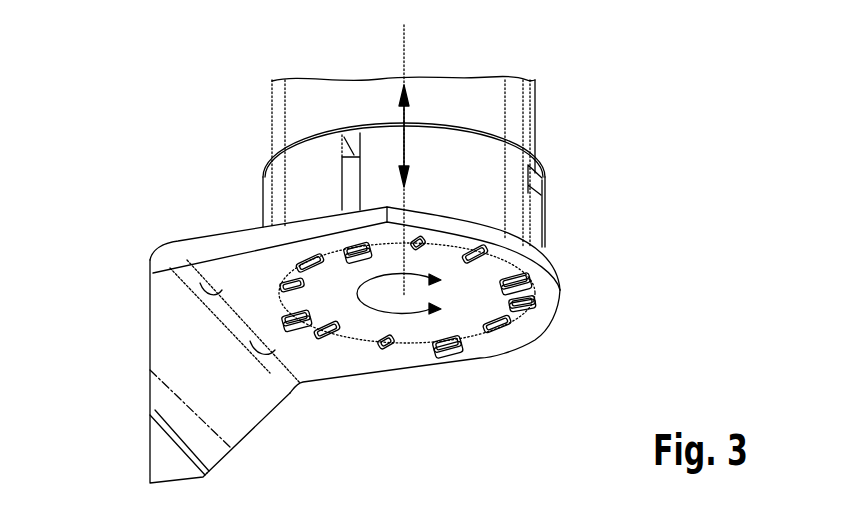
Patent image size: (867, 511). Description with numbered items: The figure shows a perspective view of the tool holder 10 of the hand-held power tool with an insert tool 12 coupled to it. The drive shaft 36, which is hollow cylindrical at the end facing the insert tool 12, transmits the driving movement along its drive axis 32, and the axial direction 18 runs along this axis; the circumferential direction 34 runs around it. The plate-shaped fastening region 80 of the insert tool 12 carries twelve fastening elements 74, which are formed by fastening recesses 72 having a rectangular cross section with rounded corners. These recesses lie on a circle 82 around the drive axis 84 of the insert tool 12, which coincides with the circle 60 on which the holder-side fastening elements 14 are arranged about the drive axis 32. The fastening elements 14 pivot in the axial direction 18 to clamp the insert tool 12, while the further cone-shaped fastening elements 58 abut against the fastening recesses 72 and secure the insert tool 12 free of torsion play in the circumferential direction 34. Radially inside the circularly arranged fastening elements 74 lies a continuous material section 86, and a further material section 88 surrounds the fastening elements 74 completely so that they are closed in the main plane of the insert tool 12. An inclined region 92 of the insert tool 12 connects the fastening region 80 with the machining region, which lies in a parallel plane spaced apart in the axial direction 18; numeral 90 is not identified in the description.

The tool holder 10 is at (563, 177).
The insert tool 12 is at (257, 410).
The fastening element 14 is at (540, 290).
The axial direction 18 is at (405, 118).
The drive axis 32 is at (338, 161).
The drive axis 84 is at (403, 42).
The circumferential direction 34 is at (410, 317).
The drive shaft 36 is at (520, 118).
The further fastening element 58 is at (537, 295).
The circle 60 is at (354, 384).
The circle 82 is at (352, 343).
The fastening recess 72 is at (232, 231).
The fastening element 74 is at (293, 263).
The fastening region 80 is at (523, 323).
The material section 86 is at (500, 332).
The recess 90 is at (468, 280).
The further material section 88 is at (543, 310).
The region 92 is at (168, 317).